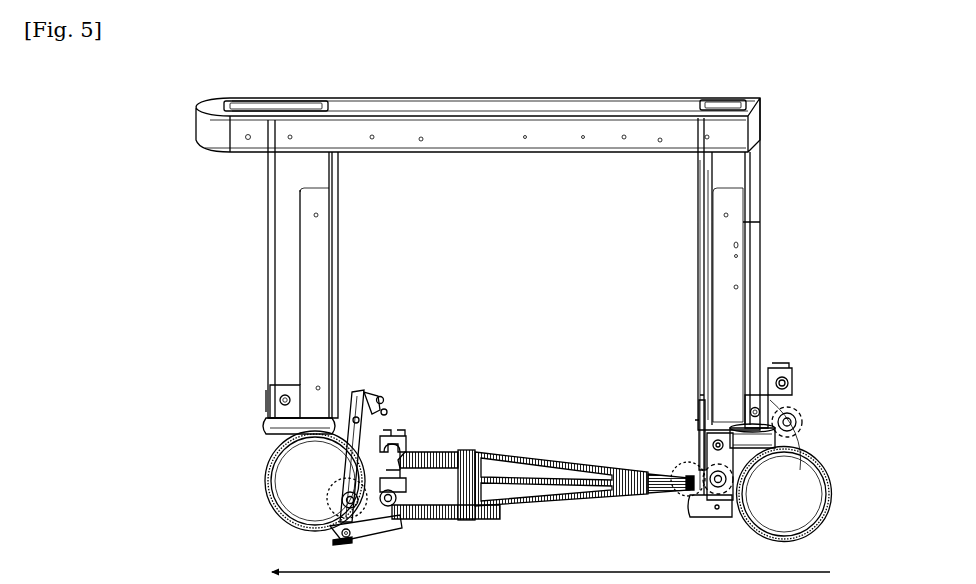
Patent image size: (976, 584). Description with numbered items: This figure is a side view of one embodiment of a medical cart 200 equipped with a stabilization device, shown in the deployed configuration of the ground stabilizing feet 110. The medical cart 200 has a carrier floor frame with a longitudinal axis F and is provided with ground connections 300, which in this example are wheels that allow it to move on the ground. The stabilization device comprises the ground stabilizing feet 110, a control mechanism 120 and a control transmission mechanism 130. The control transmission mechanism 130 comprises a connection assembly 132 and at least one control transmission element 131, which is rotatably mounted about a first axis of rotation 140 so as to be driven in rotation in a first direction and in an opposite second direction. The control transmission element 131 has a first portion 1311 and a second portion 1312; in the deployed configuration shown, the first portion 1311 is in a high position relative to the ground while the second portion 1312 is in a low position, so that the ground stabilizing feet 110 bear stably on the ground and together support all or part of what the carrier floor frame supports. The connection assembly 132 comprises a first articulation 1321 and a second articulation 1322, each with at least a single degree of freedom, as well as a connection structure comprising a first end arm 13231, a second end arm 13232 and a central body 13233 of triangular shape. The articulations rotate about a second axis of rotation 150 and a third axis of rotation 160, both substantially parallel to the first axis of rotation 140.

The medical cart 200 is at (126, 116).
The ground connections 300 is at (256, 490).
The ground stabilizing feet 110 is at (385, 529).
The control mechanism 120 is at (805, 379).
The control transmission mechanism 130 is at (533, 434).
The control transmission element 131 is at (798, 483).
The first portion of the control transmission element 1311 is at (885, 420).
The second portion of the control transmission element 1312 is at (736, 483).
The connection assembly 132 is at (568, 449).
The first articulation 1321 is at (682, 463).
The second articulation 1322 is at (326, 506).
The first end arm 13231 is at (660, 468).
The second end arm 13232 is at (426, 440).
The central body 13233 is at (461, 450).
The first axis of rotation 140 is at (703, 410).
The second axis of rotation 150 is at (724, 507).
The third axis of rotation 160 is at (327, 490).
The longitudinal axis F is at (615, 572).